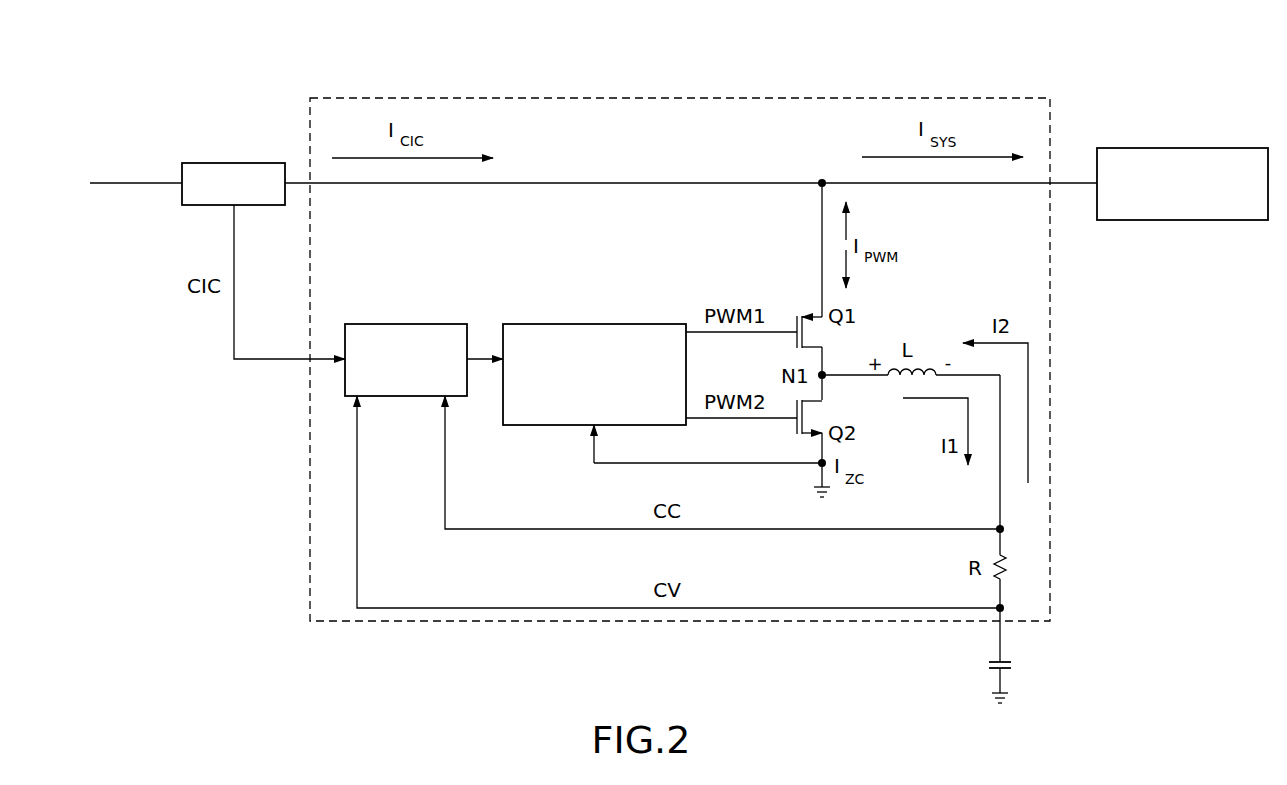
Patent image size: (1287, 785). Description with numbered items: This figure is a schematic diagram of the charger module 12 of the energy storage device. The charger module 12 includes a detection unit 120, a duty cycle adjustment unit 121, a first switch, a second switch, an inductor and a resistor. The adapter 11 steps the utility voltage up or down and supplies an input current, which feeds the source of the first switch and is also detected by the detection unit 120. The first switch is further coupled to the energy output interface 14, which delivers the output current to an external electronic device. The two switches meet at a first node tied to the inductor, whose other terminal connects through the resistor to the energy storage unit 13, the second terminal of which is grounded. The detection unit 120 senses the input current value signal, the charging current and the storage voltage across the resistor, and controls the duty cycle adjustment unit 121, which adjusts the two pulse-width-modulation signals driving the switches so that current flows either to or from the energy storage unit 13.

The adapter 11 is at (234, 163).
The charger module 12 is at (705, 98).
The energy storage unit 13 is at (1013, 663).
The energy output interface 14 is at (1180, 148).
The detection unit 120 is at (404, 324).
The duty cycle adjustment unit 121 is at (595, 324).